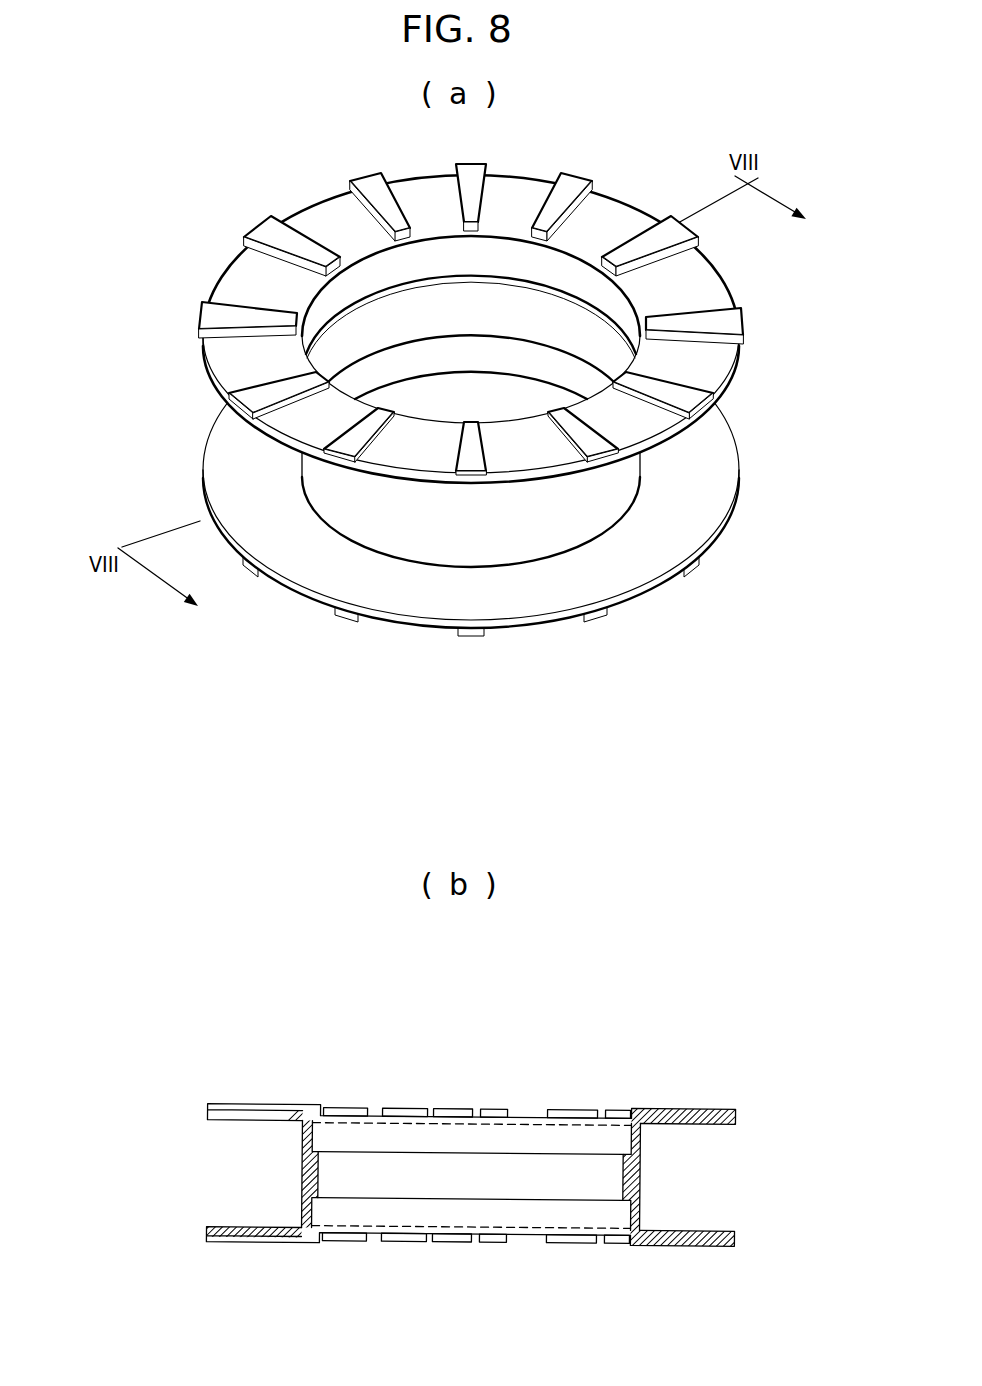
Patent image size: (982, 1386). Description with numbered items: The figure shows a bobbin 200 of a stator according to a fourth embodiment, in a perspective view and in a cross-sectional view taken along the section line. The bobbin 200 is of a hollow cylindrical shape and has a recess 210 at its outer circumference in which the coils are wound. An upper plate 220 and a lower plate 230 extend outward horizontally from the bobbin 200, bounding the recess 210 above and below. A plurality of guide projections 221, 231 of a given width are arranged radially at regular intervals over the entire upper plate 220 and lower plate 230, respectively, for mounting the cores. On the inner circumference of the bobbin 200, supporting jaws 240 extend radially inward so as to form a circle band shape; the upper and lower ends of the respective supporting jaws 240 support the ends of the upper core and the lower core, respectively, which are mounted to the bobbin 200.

The bobbin 200 is at (478, 746).
The recess 210 is at (336, 490).
The upper plate 220 is at (677, 442).
The guide projections 221 is at (692, 394).
The lower plate 230 is at (660, 584).
The guide projections 231 is at (600, 614).
The supporting jaws 240 is at (345, 337).